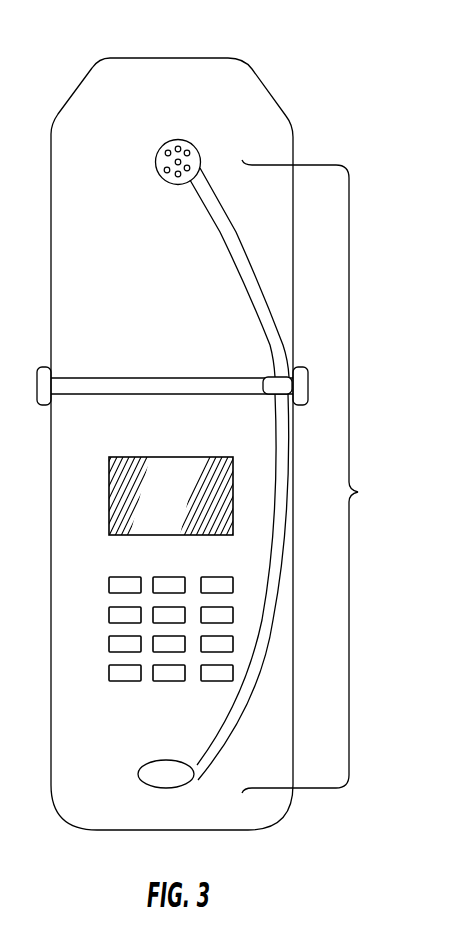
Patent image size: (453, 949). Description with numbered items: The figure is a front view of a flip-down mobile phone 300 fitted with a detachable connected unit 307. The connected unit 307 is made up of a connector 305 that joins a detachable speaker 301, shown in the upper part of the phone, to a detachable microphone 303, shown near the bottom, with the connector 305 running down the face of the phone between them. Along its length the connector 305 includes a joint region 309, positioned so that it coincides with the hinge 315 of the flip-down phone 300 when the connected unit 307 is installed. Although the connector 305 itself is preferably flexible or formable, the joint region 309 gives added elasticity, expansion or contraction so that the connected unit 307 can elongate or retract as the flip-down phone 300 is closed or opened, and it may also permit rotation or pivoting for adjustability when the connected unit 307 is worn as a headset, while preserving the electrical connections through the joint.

The flip-down mobile phone 300 is at (220, 78).
The detachable speaker 301 is at (160, 162).
The detachable microphone 303 is at (155, 782).
The connector 305 is at (252, 288).
The detachable connected unit 307 is at (320, 476).
The joint region 309 is at (273, 385).
The hinge 315 is at (92, 387).